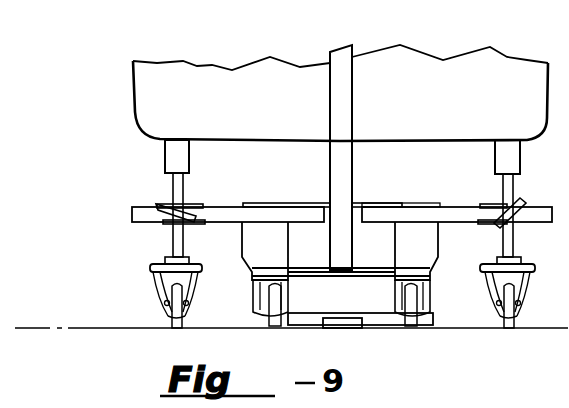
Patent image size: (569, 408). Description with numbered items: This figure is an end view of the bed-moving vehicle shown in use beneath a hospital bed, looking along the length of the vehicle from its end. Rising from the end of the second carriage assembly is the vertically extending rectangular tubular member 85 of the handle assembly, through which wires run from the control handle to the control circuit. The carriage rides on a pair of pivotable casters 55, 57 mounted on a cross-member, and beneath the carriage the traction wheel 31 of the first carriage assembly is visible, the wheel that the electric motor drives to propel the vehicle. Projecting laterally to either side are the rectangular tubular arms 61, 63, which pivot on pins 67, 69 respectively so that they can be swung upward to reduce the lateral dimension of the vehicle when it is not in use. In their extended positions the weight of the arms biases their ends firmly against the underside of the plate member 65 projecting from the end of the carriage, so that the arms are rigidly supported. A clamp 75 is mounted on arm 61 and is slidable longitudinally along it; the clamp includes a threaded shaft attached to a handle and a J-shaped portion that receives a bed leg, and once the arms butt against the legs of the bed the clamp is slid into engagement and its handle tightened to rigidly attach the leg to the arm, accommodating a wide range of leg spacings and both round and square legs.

The vertically extending rectangular tubular member 85 is at (352, 168).
The rectangular tubular arm 63 is at (220, 213).
The rectangular tubular arm 61 is at (460, 222).
The pin 69 is at (281, 216).
The plate member 65 is at (367, 207).
The pin 67 is at (400, 213).
The clamp 75 is at (492, 203).
The pivotable caster 57 is at (268, 323).
The pivotable caster 55 is at (415, 323).
The traction wheel 31 is at (320, 324).